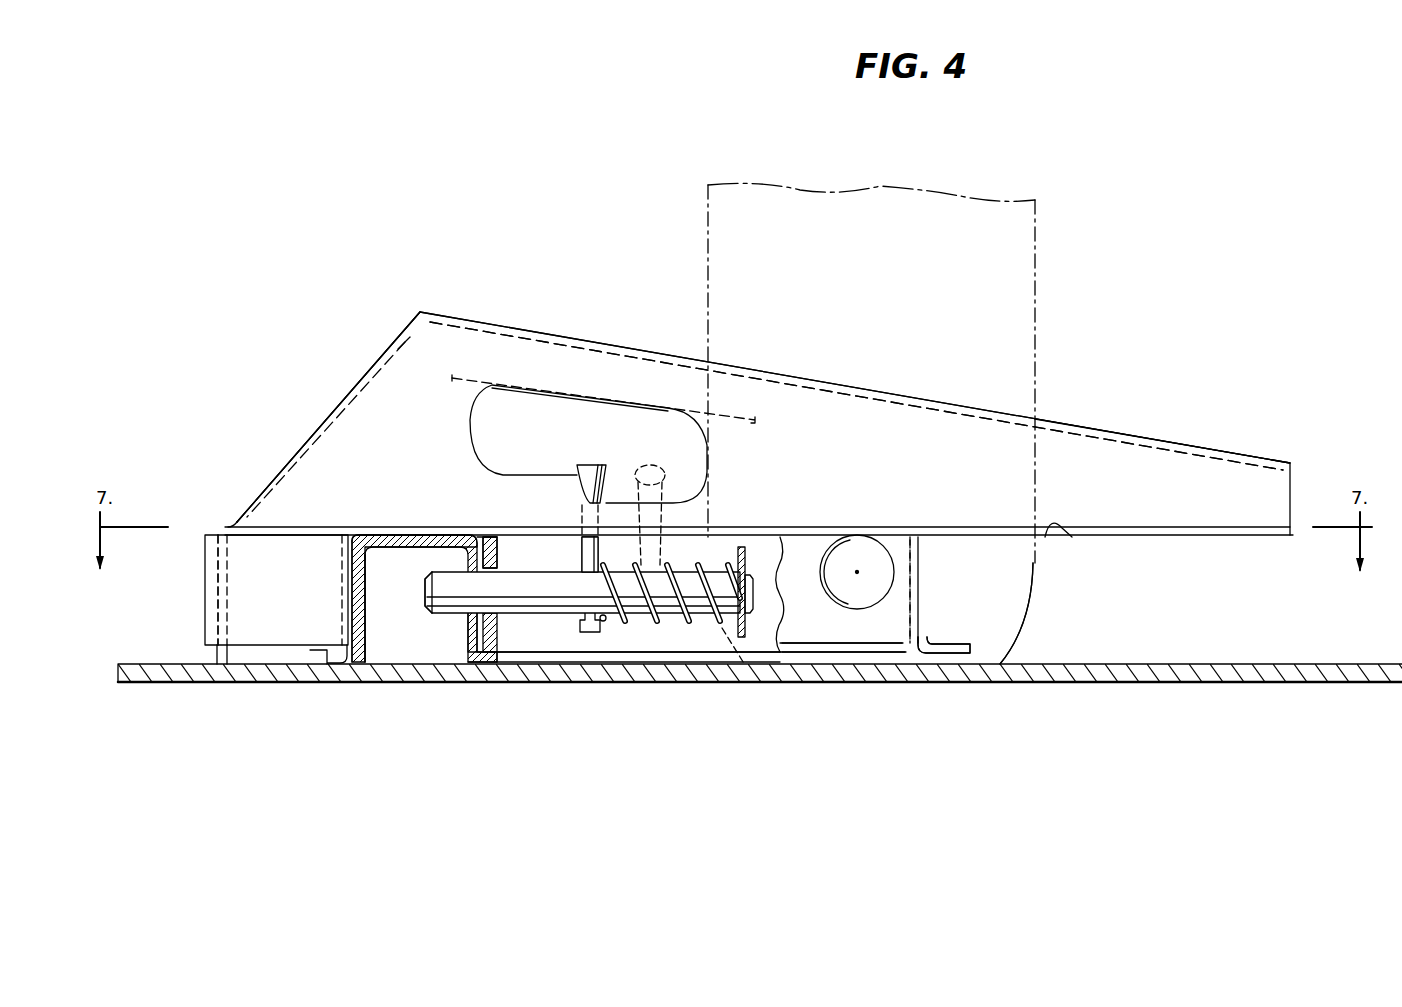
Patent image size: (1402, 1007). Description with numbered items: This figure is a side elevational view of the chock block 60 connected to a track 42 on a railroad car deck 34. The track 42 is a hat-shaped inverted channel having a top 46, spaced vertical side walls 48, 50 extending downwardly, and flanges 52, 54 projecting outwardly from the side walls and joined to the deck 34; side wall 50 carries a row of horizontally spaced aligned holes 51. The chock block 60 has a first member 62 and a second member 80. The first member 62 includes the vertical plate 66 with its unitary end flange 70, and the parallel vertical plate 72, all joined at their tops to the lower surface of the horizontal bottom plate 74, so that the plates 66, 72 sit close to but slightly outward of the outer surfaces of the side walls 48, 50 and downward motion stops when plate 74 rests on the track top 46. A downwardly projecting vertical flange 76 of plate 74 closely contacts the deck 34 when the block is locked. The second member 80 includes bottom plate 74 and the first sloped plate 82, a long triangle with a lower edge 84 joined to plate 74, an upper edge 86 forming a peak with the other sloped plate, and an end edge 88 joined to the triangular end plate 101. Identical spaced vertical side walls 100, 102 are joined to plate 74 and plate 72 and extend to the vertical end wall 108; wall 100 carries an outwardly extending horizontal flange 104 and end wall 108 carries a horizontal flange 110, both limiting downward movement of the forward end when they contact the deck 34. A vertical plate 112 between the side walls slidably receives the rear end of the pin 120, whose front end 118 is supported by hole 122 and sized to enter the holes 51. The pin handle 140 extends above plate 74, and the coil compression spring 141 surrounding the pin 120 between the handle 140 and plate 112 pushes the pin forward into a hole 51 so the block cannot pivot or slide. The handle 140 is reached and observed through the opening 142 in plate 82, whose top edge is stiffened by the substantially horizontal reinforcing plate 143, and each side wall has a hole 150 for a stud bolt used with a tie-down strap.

The deck 34 is at (752, 676).
The track 42 is at (378, 650).
The top 46 is at (425, 540).
The side wall 48 is at (368, 571).
The side wall 50 is at (480, 633).
The holes 51 is at (462, 617).
The flange 52 is at (320, 652).
The flange 54 is at (522, 659).
The chock block 60 is at (498, 322).
The first member 62 is at (245, 599).
The vertical plate 66 is at (355, 537).
The vertical flange 70 is at (310, 566).
The vertical plate 72 is at (500, 633).
The horizontal bottom plate 74 is at (748, 548).
The vertical flange 76 is at (218, 572).
The second member 80 is at (658, 346).
The first sloped plate 82 is at (424, 421).
The lower edge 84 is at (1070, 533).
The upper edge 86 is at (1085, 425).
The end edge 88 is at (405, 343).
The side wall 100 is at (828, 636).
The end plate 101 is at (318, 437).
The side wall 102 is at (611, 640).
The horizontal flange 104 is at (850, 653).
The end wall 108 is at (912, 580).
The horizontal flange 110 is at (945, 650).
The vertical plate 112 is at (752, 563).
The front end 118 is at (457, 584).
The pin 120 is at (693, 552).
The hole 122 is at (500, 565).
The pin handle 140 is at (600, 492).
The coil compression spring 141 is at (678, 628).
The opening 142 is at (540, 418).
The reinforcing plate 143 is at (478, 377).
The hole 150 is at (865, 555).